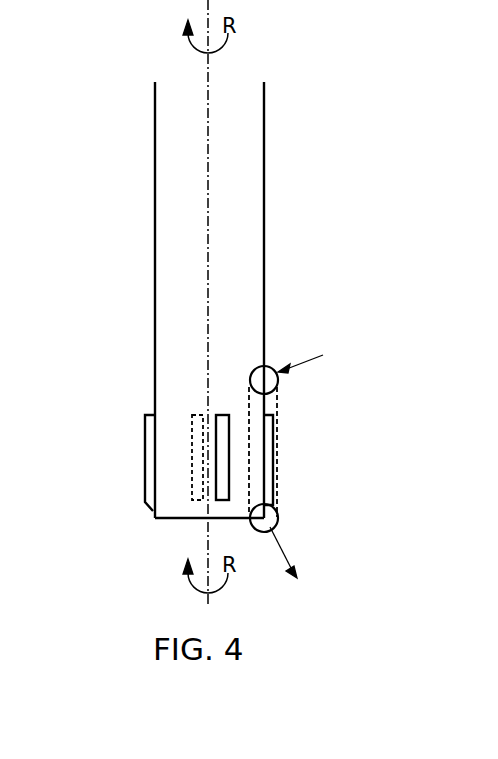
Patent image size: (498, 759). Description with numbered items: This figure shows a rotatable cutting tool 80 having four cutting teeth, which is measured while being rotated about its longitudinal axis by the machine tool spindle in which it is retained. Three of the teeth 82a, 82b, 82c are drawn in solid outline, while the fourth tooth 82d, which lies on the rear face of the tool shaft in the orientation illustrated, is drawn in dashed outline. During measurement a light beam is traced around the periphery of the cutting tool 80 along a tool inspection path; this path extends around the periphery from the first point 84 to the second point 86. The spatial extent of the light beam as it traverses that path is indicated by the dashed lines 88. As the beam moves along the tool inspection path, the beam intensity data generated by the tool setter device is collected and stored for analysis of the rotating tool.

The rotatable cutting tool 80 is at (250, 153).
The cutting tooth 82a is at (268, 432).
The cutting tooth 82b is at (219, 416).
The cutting tooth 82c is at (150, 448).
The fourth tooth 82d is at (200, 417).
The first point 84 is at (270, 377).
The second point 86 is at (277, 523).
The dashed lines 88 is at (250, 472).